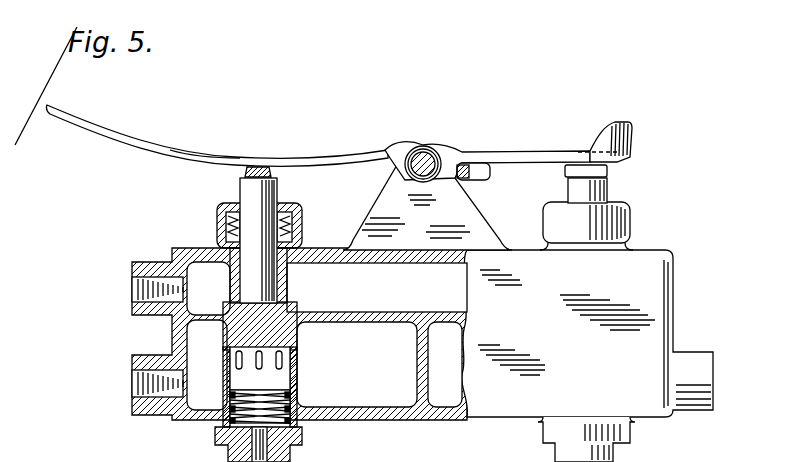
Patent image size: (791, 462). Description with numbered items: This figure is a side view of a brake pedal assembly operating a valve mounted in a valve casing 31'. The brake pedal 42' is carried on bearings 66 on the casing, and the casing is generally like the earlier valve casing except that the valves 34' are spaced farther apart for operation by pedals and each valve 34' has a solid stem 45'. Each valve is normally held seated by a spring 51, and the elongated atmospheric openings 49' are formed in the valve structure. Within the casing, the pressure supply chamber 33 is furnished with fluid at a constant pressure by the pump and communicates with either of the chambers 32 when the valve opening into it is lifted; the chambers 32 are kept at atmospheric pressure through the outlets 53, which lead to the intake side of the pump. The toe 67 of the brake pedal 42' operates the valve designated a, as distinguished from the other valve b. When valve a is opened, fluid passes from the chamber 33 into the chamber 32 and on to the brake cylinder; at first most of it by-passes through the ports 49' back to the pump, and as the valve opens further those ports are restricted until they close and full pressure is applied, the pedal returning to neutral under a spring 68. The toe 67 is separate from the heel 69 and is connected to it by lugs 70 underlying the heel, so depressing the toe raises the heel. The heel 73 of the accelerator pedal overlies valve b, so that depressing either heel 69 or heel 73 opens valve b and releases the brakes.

The valve casing 31' is at (426, 332).
The chambers 32 is at (195, 397).
The pressure supply chamber 33 is at (375, 282).
The valve 34' is at (286, 317).
The brake pedal 42' is at (217, 140).
The solid stem 45' is at (453, 235).
The atmospheric opening 49' is at (286, 383).
The spring 51 is at (298, 400).
The outlet 53 is at (288, 452).
The bearing 66 is at (463, 220).
The toe 67 is at (190, 158).
The spring 68 is at (393, 156).
The heel 69 is at (520, 156).
The lug 70 is at (480, 158).
The heel 73 is at (607, 170).
The valve a is at (243, 187).
The valve b is at (568, 190).